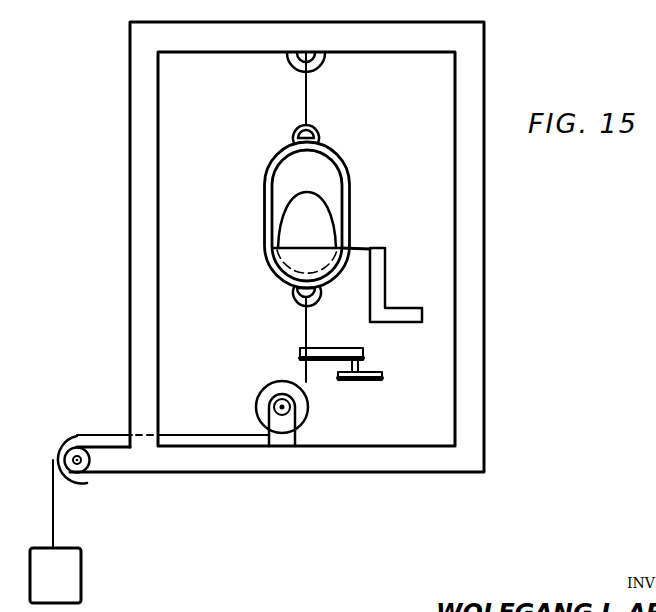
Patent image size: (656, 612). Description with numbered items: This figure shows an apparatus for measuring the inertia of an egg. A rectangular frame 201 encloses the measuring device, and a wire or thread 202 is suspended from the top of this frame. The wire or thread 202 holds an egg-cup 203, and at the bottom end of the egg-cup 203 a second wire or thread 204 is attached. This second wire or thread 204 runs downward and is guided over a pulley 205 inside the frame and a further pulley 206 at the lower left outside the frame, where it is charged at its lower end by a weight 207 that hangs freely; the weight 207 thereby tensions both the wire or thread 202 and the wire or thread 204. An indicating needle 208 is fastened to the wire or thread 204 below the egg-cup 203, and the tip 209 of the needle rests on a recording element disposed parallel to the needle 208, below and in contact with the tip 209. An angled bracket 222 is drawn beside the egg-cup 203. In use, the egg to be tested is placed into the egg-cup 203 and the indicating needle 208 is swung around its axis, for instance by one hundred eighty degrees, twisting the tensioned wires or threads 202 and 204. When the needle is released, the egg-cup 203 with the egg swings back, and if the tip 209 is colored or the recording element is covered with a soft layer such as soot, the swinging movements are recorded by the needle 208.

The housing / frame 201 is at (137, 140).
The wire or thread 202 is at (306, 116).
The egg-cup 203 is at (284, 262).
The wire or thread 204 is at (306, 316).
The pulley 205 is at (262, 396).
The pulley 206 is at (85, 481).
The weight 207 is at (72, 573).
The indicating needle 208 is at (331, 347).
The tip 209 is at (358, 368).
The stop bracket 222 is at (381, 265).